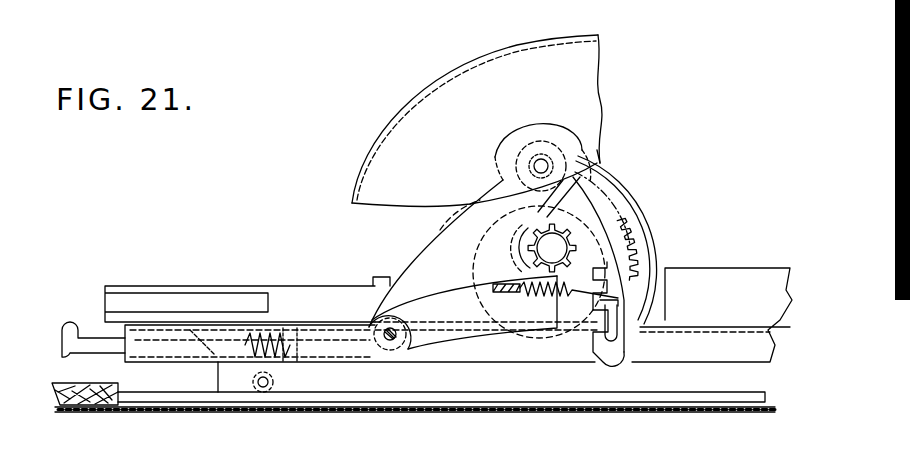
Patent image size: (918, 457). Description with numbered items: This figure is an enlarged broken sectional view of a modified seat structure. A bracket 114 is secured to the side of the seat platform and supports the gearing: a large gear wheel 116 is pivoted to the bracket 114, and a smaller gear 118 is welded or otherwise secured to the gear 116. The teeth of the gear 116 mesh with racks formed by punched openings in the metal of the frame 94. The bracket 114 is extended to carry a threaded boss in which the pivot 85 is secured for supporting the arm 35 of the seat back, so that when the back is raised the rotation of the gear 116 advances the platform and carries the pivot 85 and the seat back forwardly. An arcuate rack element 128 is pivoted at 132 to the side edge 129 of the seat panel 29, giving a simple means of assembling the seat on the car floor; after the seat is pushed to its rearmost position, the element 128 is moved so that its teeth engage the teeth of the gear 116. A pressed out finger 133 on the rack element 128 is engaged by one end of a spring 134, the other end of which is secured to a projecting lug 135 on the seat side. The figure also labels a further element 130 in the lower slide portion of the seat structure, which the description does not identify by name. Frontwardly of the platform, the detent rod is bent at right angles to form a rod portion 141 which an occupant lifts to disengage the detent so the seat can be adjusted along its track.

The seat panel 29 is at (594, 77).
The side angle member 35 is at (440, 345).
The pivot 85 is at (373, 346).
The frame 94 is at (652, 362).
The bracket 114 is at (618, 172).
The large gear wheel 116 is at (628, 204).
The smaller gear 118 is at (575, 248).
The arcuate rack element 128 is at (607, 368).
The side edge 129 is at (415, 103).
The slide member 130 is at (537, 348).
The pivot 132 is at (541, 160).
The pressed out finger 133 is at (640, 276).
The spring 134 is at (431, 322).
The projecting lug 135 is at (480, 268).
The rod portion 141 is at (58, 338).